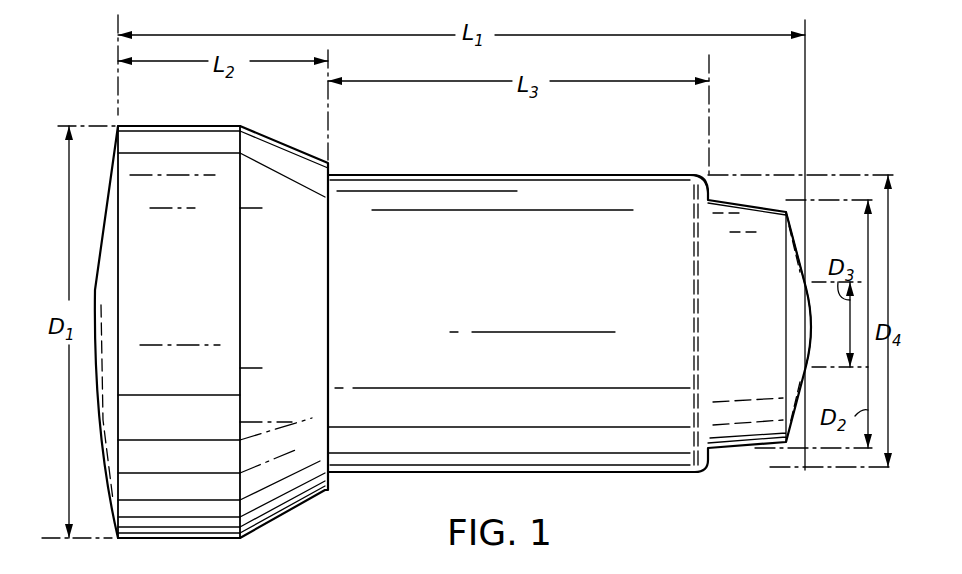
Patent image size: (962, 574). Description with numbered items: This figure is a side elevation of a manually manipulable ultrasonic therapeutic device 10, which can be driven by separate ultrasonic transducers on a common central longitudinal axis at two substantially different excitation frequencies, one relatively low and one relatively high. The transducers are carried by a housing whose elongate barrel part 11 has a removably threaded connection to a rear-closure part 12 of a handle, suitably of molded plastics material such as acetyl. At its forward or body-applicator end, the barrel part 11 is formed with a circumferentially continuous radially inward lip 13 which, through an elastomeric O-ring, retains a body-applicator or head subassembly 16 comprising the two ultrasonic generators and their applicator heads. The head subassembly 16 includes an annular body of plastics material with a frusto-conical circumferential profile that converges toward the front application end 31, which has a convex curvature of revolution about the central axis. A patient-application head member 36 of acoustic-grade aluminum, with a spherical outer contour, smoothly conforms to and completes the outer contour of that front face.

The manually manipulable device 10 is at (377, 172).
The elongate barrel part 11 is at (513, 227).
The rear-closure part 12 is at (190, 142).
The radially inward lip 13 is at (708, 197).
The head subassembly 16 is at (747, 450).
The application end 31 is at (791, 254).
The patient-application head member 36 is at (812, 331).